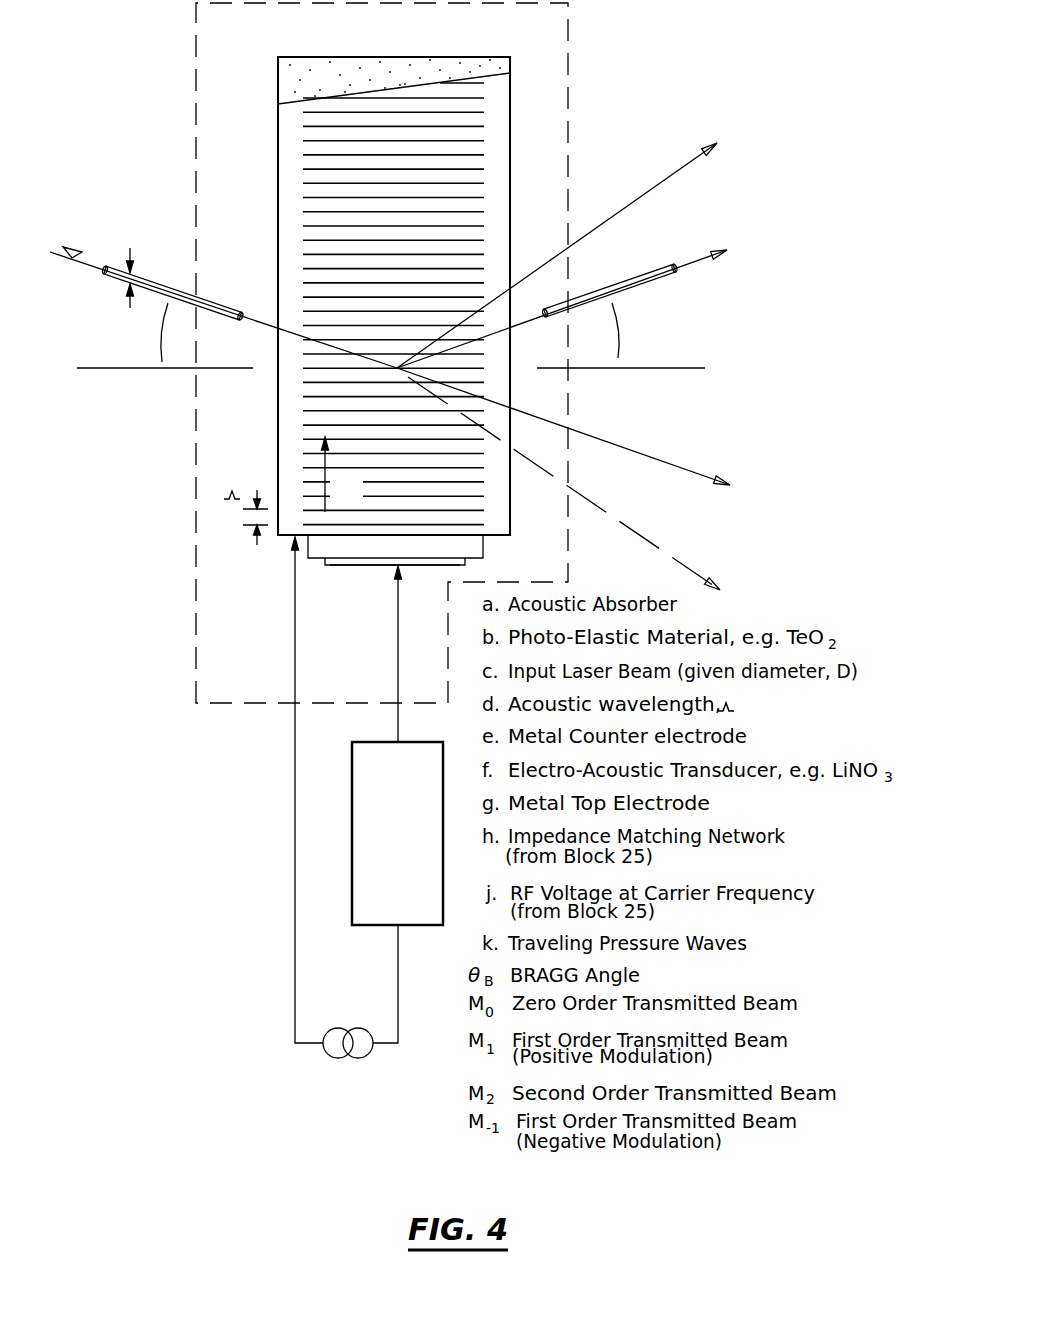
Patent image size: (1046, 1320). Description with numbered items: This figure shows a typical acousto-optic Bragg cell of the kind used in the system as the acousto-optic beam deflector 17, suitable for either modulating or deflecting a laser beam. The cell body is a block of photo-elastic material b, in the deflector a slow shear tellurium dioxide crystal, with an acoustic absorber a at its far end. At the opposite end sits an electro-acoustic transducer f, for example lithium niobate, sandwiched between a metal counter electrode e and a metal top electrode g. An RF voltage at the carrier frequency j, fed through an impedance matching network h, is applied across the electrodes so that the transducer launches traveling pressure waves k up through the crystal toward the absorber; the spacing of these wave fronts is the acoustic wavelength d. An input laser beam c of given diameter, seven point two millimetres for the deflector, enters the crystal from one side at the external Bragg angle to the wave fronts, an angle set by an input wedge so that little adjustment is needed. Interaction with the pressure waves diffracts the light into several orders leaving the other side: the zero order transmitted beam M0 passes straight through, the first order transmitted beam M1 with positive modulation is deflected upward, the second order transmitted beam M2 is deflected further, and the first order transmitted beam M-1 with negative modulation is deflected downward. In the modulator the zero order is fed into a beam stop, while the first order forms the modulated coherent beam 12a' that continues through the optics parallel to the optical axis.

The acoustic absorber a is at (268, 77).
The photo-elastic material b is at (268, 120).
The input laser beam c is at (216, 270).
The acoustic wavelength d is at (216, 517).
The metal counter electrode e is at (272, 546).
The electro-acoustic transducer f is at (300, 565).
The metal top electrode g is at (317, 576).
The impedance matching network h is at (376, 828).
The RF voltage at carrier frequency j is at (318, 1063).
The traveling pressure waves k is at (336, 474).
The acousto-optic beam deflector 17 is at (566, 74).
The modulated coherent beam 12a' is at (669, 241).
The zero order transmitted beam M0 is at (578, 426).
The first order transmitted beam (positive modulation) M1 is at (578, 296).
The second order transmitted beam M2 is at (574, 247).
The first order transmitted beam (negative modulation) M-1 is at (580, 485).